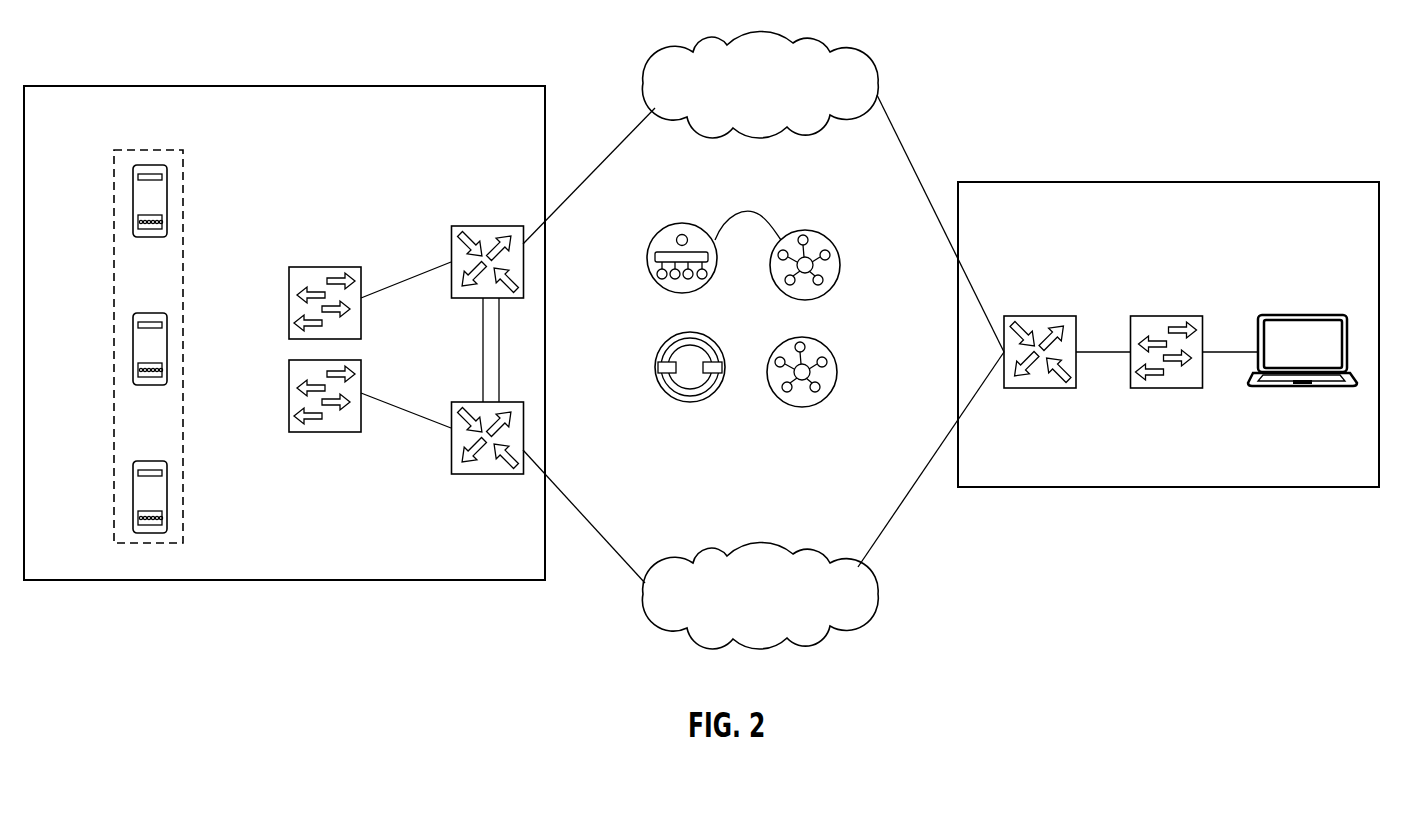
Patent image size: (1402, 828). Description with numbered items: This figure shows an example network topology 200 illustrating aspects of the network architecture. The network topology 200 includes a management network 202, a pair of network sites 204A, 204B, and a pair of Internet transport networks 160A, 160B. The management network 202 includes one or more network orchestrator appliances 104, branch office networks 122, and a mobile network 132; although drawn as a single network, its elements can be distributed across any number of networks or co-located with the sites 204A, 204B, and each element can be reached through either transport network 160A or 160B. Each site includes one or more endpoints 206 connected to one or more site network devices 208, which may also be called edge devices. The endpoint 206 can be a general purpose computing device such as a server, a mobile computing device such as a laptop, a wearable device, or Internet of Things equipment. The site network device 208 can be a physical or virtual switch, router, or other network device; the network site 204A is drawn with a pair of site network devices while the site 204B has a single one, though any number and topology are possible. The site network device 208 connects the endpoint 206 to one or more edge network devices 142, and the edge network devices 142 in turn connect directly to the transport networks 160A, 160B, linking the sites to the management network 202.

The network topology 200 is at (1213, 34).
The network site 204A is at (108, 85).
The network site 204B is at (1027, 181).
The endpoint 206 is at (133, 201).
The site network device 208 is at (308, 267).
The edge network device 142 is at (487, 225).
The Internet transport network 160A is at (668, 56).
The Internet transport network 160B is at (766, 548).
The branch office network 122 is at (653, 237).
The mobile network 132 is at (816, 231).
The network orchestrator appliance 104 is at (660, 348).
The management network 202 is at (838, 262).